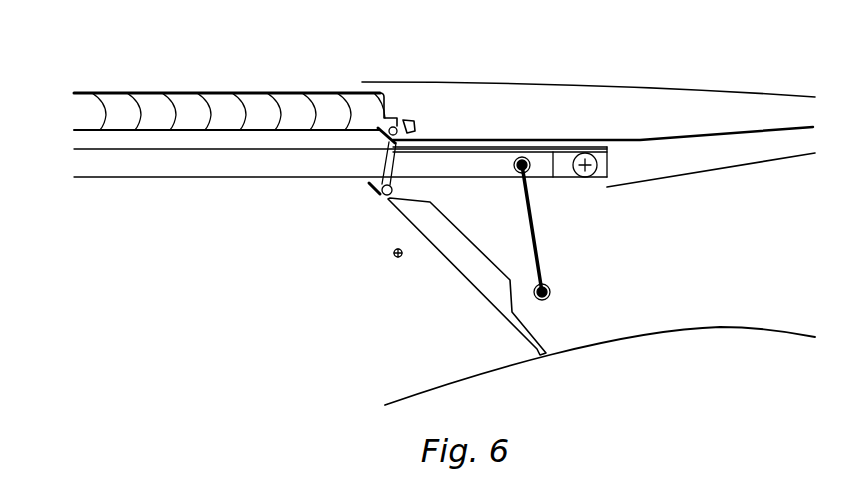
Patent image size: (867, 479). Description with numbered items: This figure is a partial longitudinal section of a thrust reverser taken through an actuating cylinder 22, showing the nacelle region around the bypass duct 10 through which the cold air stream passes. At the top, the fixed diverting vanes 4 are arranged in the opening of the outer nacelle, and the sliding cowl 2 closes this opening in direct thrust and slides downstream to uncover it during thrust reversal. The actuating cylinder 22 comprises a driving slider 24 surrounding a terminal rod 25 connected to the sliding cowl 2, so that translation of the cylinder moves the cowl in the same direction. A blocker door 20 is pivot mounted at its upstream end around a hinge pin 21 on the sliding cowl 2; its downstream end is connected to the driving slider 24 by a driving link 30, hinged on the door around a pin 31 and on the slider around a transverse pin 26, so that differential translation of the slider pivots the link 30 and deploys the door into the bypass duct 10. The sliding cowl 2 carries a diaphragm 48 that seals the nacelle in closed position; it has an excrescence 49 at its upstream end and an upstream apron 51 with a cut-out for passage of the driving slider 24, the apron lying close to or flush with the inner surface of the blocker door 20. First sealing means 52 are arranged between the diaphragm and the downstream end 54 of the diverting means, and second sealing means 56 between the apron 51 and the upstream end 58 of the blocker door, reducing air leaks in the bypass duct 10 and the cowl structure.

The sliding cowl 2 is at (667, 159).
The diverting vanes 4 is at (148, 118).
The bypass duct 10 is at (723, 242).
The blocker door 20 is at (495, 287).
The hinge pin 21 is at (395, 256).
The actuating cylinder 22 is at (122, 158).
The driving slider 24 is at (200, 163).
The terminal rod 25 is at (562, 163).
The transverse pin 26 is at (527, 160).
The driving link 30 is at (536, 226).
The pin 31 is at (549, 295).
The diaphragm 48 is at (483, 145).
The excrescence 49 is at (383, 138).
The upstream apron 51 is at (392, 165).
The first sealing means 52 is at (402, 120).
The downstream end of the diverting means 54 is at (397, 145).
The second sealing means 56 is at (377, 196).
The upstream end of the blocker door 58 is at (370, 190).